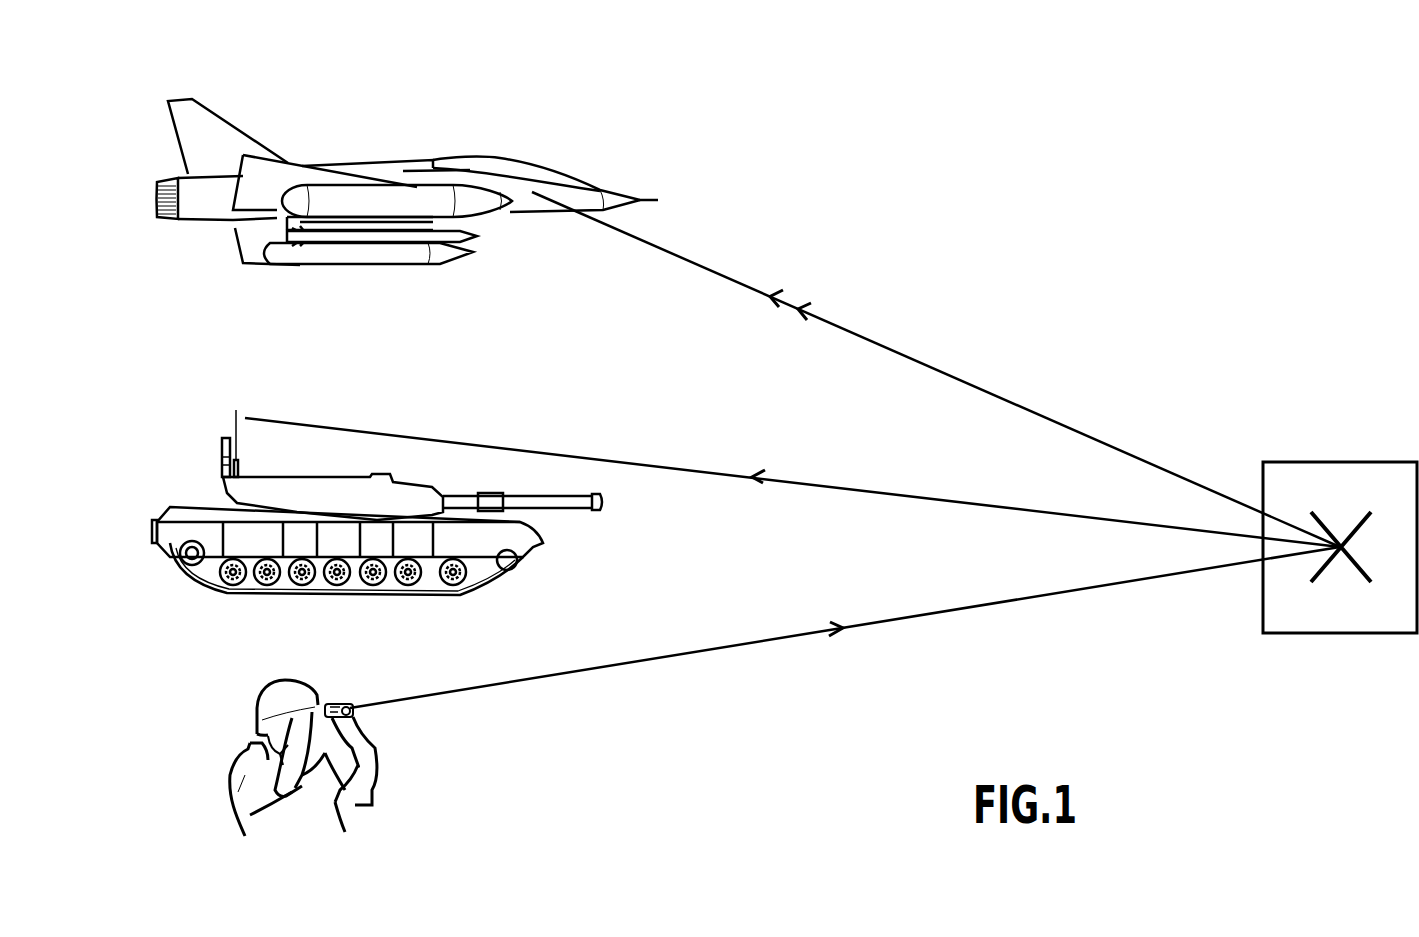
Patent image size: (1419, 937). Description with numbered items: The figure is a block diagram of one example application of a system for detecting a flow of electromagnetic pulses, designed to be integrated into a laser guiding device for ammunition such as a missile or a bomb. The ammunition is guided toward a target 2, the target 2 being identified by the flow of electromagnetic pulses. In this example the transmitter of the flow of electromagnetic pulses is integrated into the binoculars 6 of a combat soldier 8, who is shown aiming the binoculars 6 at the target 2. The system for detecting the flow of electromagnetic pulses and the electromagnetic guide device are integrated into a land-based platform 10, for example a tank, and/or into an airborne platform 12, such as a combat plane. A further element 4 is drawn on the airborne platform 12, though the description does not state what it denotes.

The target 2 is at (1353, 482).
The pod (designation device on aircraft) 4 is at (473, 197).
The binoculars 6 is at (335, 700).
The combat soldier 8 is at (228, 717).
The land-based platform 10 is at (203, 423).
The airborne platform 12 is at (360, 133).